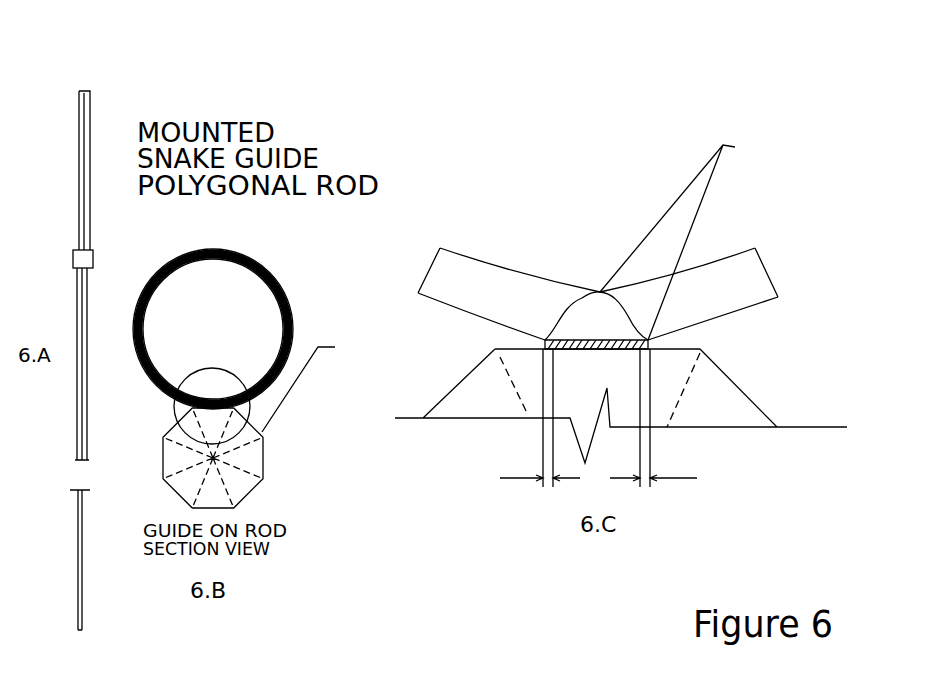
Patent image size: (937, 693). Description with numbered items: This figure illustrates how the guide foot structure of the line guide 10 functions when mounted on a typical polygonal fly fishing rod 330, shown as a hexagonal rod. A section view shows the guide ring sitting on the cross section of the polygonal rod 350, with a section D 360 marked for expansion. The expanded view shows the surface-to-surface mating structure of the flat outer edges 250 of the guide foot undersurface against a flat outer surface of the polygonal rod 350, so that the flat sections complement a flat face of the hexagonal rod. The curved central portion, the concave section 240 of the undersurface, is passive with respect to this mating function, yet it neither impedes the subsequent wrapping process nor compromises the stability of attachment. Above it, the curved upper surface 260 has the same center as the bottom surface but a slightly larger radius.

The line guide 10 is at (277, 280).
The typical polygonal fly fishing rod 330 is at (78, 223).
The section D expanded in FIG. 6.C 360 is at (212, 382).
The cross section of polygonal rod 350 is at (466, 370).
The concave section of guide foot undersurface 240 is at (610, 340).
The flat sections of guide foot undersurface 250 is at (597, 392).
The curved upper surface of guide foot 260 is at (585, 338).